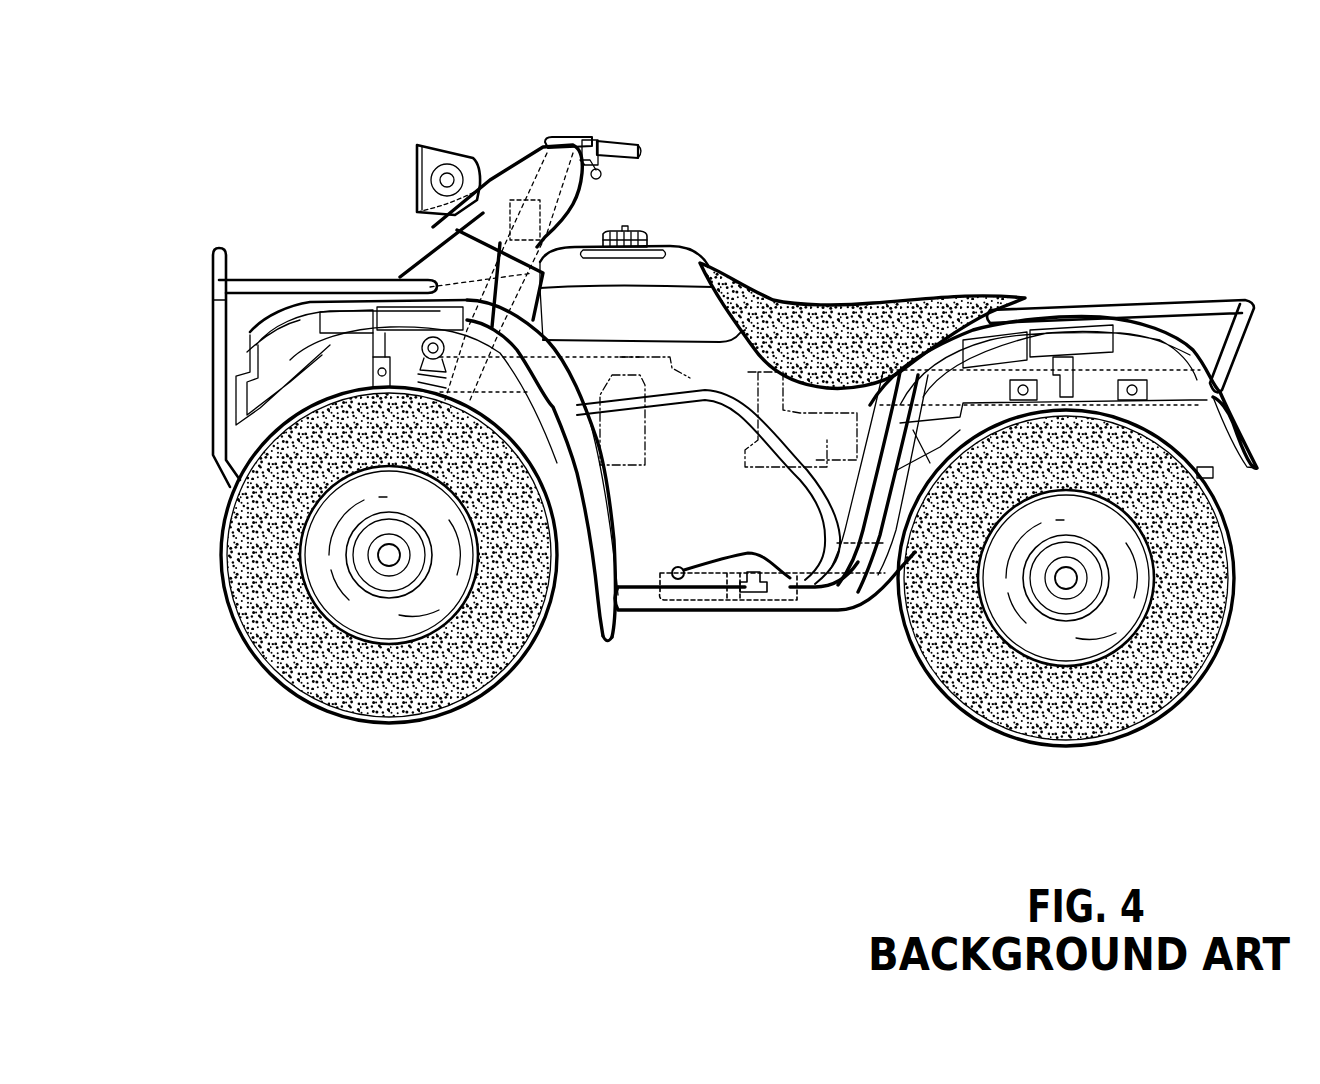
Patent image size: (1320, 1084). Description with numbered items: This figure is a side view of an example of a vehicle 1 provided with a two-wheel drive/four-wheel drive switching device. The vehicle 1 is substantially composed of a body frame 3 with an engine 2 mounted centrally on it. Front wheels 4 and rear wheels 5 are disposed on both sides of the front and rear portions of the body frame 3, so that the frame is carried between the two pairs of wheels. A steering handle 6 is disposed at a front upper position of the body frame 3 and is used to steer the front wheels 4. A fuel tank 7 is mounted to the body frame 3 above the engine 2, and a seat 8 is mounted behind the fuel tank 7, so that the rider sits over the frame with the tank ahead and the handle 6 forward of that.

The vehicle 1 is at (684, 247).
The engine 2 is at (805, 598).
The body frame 3 is at (683, 612).
The front wheels 4 is at (232, 620).
The rear wheels 5 is at (934, 690).
The steering handle 6 is at (594, 142).
The fuel tank 7 is at (655, 234).
The seat 8 is at (866, 322).